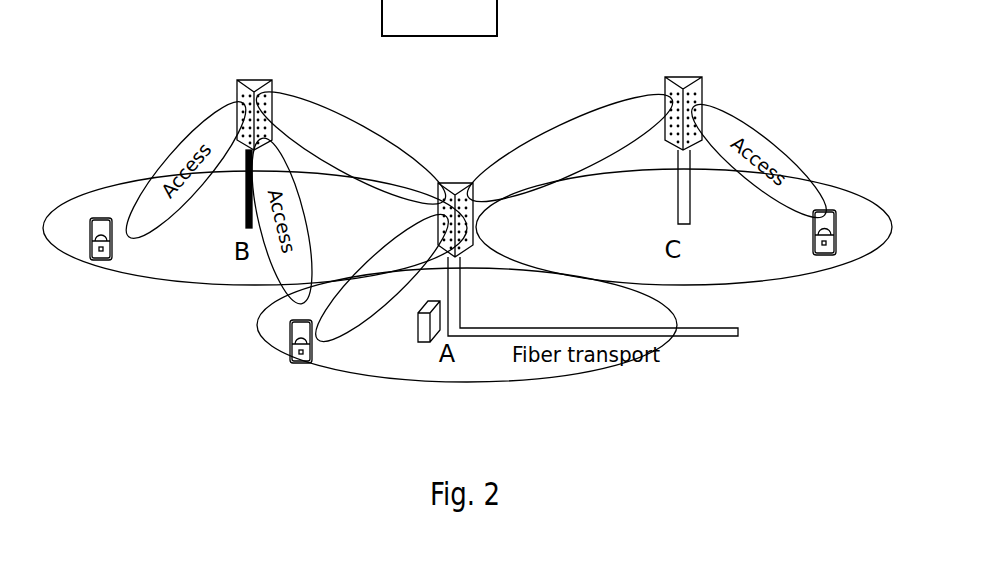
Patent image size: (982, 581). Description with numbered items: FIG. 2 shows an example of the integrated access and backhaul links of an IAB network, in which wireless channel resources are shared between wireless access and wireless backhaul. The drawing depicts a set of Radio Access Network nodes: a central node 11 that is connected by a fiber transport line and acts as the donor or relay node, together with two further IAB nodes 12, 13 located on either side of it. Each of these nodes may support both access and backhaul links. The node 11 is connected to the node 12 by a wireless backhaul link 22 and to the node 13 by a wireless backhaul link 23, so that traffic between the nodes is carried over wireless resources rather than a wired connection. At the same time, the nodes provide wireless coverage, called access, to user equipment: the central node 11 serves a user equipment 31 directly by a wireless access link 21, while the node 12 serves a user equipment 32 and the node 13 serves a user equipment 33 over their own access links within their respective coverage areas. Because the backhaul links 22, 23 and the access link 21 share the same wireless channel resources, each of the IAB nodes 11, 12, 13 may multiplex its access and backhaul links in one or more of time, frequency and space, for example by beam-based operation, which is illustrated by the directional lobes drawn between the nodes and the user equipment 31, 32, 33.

The central network node (base station A) 11 is at (458, 182).
The network node (base station B) 12 is at (258, 80).
The network node (base station C) 13 is at (685, 77).
The access link 21 is at (343, 320).
The backhaul link 22 is at (360, 127).
The backhaul link 23 is at (547, 135).
The user equipment 31 is at (300, 362).
The user equipment 32 is at (89, 268).
The user equipment 33 is at (822, 255).